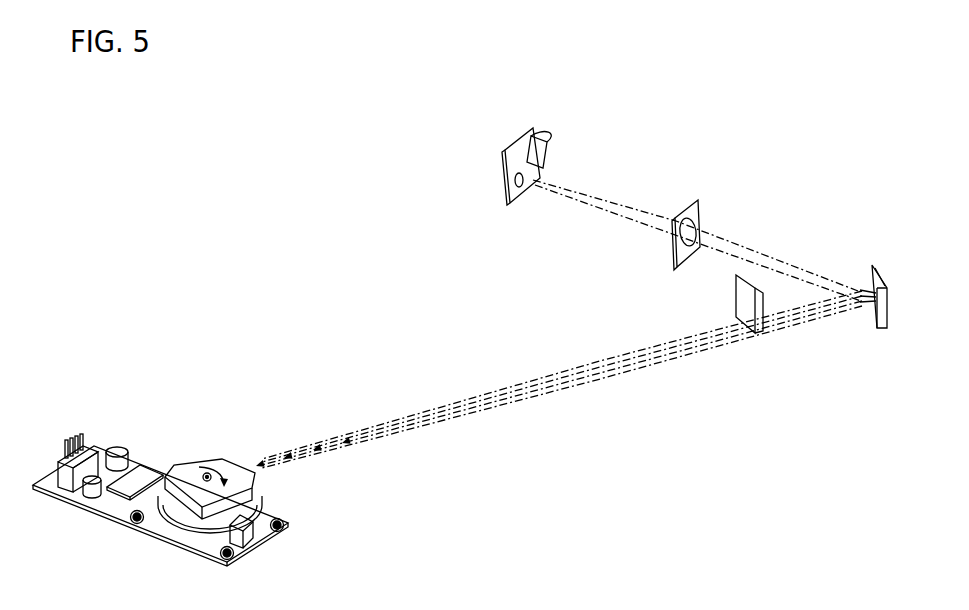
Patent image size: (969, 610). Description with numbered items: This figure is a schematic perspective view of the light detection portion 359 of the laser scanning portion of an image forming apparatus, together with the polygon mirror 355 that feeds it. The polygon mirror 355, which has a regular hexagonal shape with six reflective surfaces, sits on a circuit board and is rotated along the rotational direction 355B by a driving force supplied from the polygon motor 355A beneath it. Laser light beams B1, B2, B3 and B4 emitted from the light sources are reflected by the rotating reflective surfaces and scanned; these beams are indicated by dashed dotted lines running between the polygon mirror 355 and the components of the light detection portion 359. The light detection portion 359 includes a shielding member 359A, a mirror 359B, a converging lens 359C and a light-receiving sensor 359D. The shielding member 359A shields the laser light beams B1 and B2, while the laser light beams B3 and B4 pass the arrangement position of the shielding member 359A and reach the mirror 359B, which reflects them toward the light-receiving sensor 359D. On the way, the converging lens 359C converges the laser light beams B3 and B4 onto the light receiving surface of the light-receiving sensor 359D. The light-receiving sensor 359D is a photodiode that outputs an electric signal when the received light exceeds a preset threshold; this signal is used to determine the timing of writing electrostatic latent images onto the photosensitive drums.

The polygon mirror 355 is at (176, 493).
The polygon motor 355A is at (177, 533).
The rotational direction 355B is at (220, 471).
The light detection portion 359 is at (576, 279).
The shielding member 359A is at (735, 290).
The mirror 359B is at (877, 262).
The converging lens 359C is at (686, 203).
The light-receiving sensor 359D is at (524, 128).
The laser light beam B1 is at (540, 379).
The laser light beam B2 is at (627, 356).
The laser light beam B3 is at (791, 262).
The laser light beam B4 is at (815, 322).